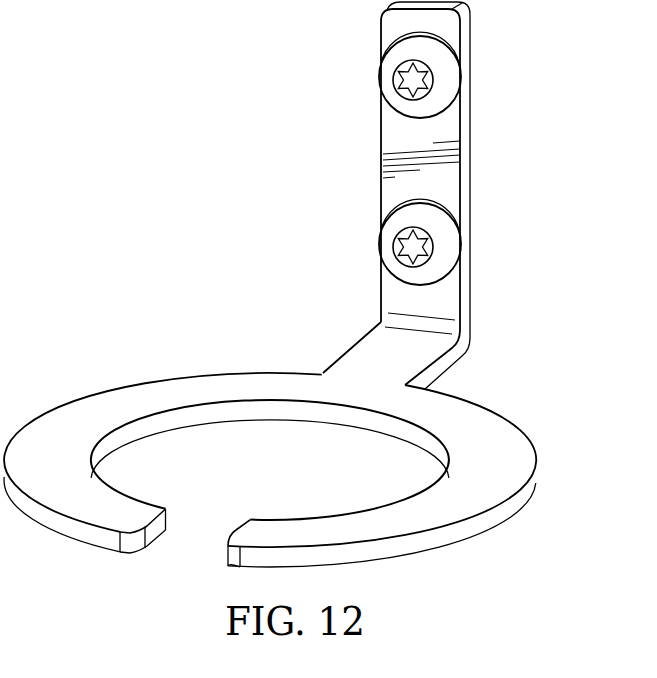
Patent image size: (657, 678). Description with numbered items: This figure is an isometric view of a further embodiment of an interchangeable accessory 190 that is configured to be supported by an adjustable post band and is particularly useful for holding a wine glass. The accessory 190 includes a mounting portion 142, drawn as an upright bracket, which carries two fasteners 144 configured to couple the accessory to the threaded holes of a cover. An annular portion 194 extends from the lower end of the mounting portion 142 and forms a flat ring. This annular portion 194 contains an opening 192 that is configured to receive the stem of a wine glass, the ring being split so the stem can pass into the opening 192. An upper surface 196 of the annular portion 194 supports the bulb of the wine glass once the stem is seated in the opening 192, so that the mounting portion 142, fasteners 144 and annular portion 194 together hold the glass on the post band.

The interchangeable accessory 190 is at (248, 62).
The mounting portion 142 is at (488, 134).
The fasteners 144 is at (390, 77).
The opening 192 is at (156, 579).
The annular portion 194 is at (502, 432).
The upper surface 196 is at (110, 400).